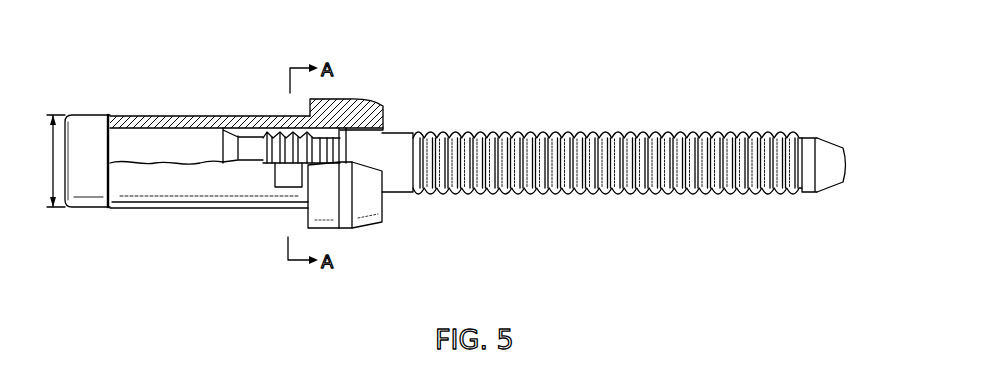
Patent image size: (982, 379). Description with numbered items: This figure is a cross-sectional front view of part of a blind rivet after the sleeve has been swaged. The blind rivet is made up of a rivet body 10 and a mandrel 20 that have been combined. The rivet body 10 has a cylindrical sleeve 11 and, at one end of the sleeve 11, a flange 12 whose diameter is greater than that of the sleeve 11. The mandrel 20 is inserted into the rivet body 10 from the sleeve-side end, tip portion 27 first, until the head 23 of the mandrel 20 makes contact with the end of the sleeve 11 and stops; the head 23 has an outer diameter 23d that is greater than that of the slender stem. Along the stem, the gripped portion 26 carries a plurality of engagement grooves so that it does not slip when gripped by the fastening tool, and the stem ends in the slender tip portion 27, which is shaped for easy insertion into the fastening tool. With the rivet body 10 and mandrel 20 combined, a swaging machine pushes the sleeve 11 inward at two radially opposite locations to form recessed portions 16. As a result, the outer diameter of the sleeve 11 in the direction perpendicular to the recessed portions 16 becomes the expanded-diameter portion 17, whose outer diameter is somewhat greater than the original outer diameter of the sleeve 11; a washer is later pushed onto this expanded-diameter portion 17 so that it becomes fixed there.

The rivet body 10 is at (190, 88).
The sleeve 11 is at (153, 117).
The flange 12 is at (347, 99).
The recessed portions 16 is at (276, 170).
The expanded-diameter portion 17 is at (285, 116).
The mandrel 20 is at (578, 119).
The head 23 is at (82, 114).
The outer diameter of the head 23d is at (52, 182).
The gripped portion 26 is at (687, 135).
The tip portion 27 is at (832, 143).